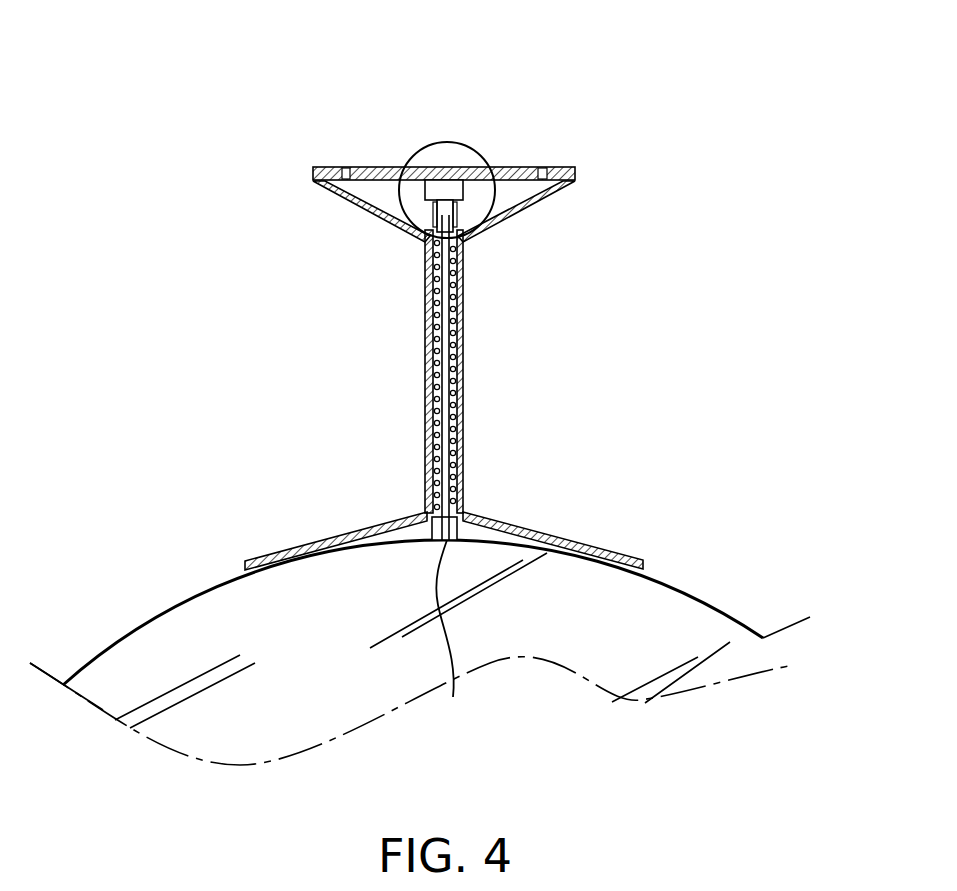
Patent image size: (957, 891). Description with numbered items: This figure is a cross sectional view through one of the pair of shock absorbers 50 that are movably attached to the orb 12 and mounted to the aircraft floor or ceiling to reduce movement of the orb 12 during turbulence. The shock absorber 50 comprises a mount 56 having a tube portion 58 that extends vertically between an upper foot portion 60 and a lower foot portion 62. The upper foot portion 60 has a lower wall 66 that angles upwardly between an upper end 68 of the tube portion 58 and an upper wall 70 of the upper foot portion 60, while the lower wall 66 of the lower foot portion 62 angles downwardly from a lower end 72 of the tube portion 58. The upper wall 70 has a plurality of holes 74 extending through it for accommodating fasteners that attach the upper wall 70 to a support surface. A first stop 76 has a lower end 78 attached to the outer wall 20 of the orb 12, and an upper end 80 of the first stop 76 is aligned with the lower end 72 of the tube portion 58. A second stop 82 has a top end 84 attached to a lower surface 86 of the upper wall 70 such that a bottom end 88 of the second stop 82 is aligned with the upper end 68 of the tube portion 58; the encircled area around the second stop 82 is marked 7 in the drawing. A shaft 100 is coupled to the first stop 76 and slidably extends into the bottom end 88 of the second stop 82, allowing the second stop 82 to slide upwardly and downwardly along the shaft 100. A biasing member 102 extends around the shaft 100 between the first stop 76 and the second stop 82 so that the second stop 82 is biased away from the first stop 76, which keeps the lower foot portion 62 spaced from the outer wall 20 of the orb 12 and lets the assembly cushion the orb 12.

The detail circle (FIG. 7 region) 7 is at (452, 141).
The orb 12 is at (150, 610).
The outer wall 20 is at (717, 608).
The shock absorbers 50 is at (323, 203).
The mount 56 is at (458, 371).
The tube portion 58 is at (423, 395).
The upper foot portion 60 is at (370, 213).
The lower foot portion 62 is at (322, 535).
The lower wall 66 is at (513, 213).
The upper end 68 is at (458, 228).
The upper wall 70 is at (355, 167).
The lower end 72 is at (470, 507).
The holes 74 is at (340, 164).
The first stop 76 is at (437, 533).
The lower end 78 is at (447, 641).
The upper end 80 is at (462, 500).
The second stop 82 is at (428, 186).
The top end 84 is at (440, 177).
The lower surface 86 is at (522, 178).
The bottom end 88 is at (430, 272).
The shaft 100 is at (457, 273).
The biasing member 102 is at (440, 343).